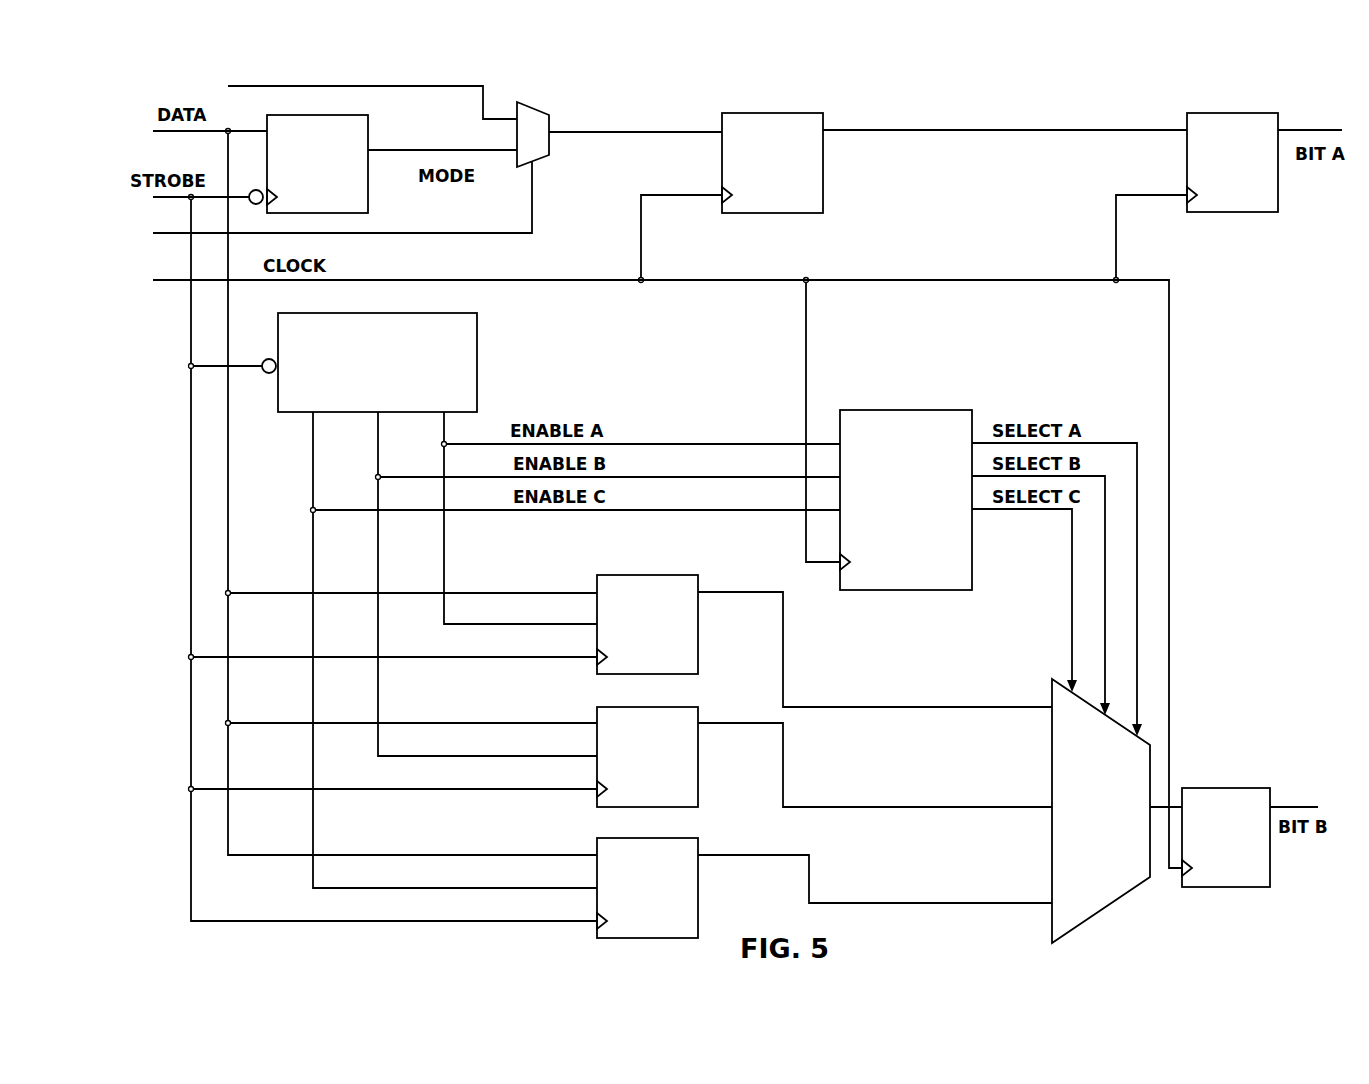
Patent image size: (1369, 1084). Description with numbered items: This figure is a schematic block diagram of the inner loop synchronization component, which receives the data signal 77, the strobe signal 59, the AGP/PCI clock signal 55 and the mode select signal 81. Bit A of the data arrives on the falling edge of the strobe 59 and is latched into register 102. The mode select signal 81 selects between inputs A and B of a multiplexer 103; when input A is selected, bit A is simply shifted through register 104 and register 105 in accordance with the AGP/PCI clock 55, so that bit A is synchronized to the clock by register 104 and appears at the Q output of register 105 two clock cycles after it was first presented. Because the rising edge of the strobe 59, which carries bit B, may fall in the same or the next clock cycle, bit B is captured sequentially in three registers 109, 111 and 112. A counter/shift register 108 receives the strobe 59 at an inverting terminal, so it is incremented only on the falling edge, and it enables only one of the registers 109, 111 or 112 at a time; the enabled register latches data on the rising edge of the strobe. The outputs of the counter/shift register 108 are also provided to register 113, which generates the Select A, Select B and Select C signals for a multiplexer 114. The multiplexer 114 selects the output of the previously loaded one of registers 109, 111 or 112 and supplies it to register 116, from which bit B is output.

The data signal 77 is at (240, 131).
The strobe signal 59 is at (238, 197).
The register 102 is at (370, 116).
The multiplexer 103 is at (549, 115).
The mode select signal 81 is at (452, 217).
The AGP/PCI clock signal 55 is at (360, 280).
The register 104 is at (823, 113).
The register 105 is at (1278, 113).
The counter/shift register 108 is at (477, 320).
The register 113 is at (913, 428).
The register 109 is at (698, 575).
The register 111 is at (698, 707).
The register 112 is at (698, 838).
The multiplexer 114 is at (1112, 898).
The register 116 is at (1218, 792).